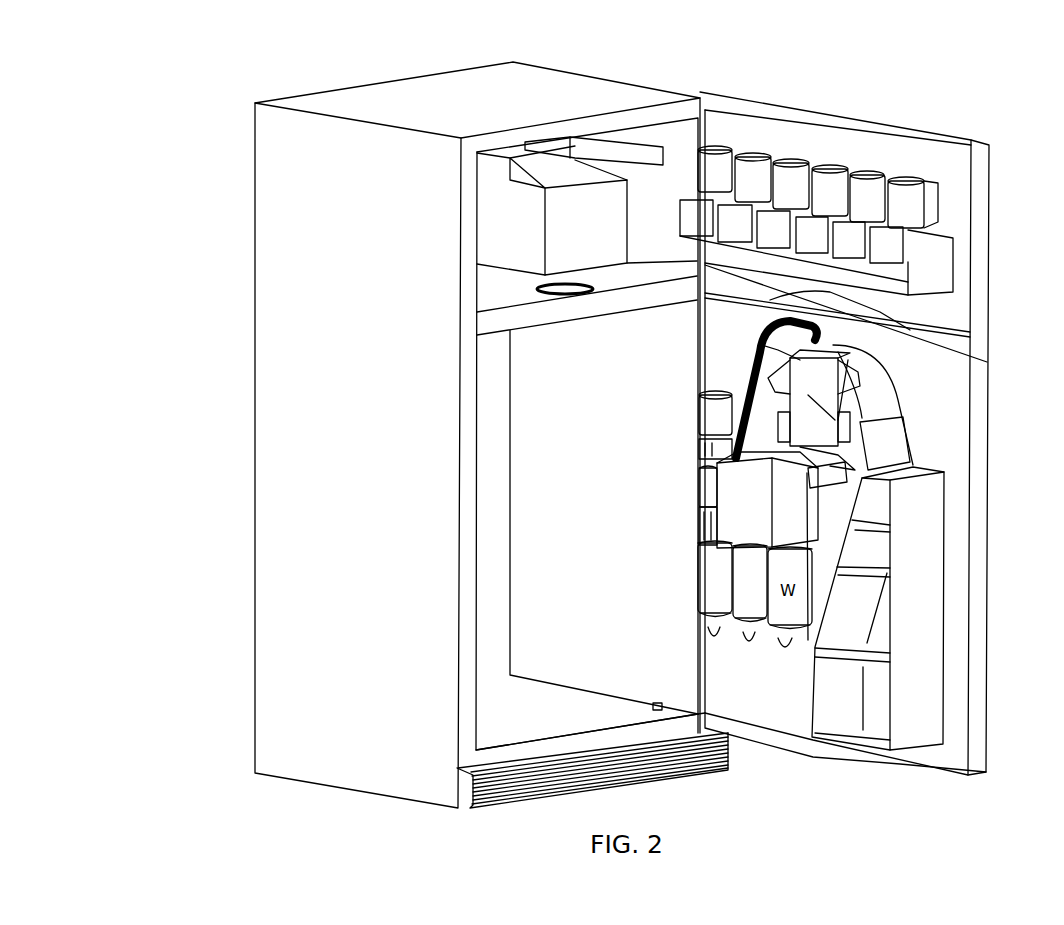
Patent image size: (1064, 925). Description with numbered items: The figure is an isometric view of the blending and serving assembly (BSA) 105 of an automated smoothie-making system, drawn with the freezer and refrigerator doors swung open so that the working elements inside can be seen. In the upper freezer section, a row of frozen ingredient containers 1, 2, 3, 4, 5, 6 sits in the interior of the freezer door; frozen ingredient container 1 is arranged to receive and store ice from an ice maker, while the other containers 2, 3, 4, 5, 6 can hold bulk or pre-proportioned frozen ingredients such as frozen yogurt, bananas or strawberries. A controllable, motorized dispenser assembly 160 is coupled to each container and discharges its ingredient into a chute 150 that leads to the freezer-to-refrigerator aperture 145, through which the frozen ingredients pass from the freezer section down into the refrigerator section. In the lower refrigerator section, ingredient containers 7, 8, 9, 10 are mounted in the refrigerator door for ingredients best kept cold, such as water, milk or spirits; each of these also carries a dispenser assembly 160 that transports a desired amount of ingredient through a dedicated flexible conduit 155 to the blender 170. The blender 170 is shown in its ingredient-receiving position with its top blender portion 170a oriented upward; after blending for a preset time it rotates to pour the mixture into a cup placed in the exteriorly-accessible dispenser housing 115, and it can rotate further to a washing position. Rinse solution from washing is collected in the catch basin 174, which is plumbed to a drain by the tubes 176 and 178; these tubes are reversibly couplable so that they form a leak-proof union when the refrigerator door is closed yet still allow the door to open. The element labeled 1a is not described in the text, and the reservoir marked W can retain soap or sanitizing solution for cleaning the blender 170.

The blending and serving assembly (BSA) 105 is at (210, 69).
The chute 150 is at (986, 363).
The frozen ingredient container 1 is at (740, 134).
The freezer box 1a is at (643, 193).
The frozen ingredient container 2 is at (753, 177).
The frozen ingredient container 3 is at (791, 184).
The frozen ingredient container 4 is at (830, 190).
The frozen ingredient container 5 is at (867, 196).
The frozen ingredient container 6 is at (913, 202).
The ingredient container 7 is at (698, 413).
The ingredient container 8 is at (698, 488).
The ingredient container 9 is at (715, 579).
The ingredient container 10 is at (750, 583).
The dispenser housing 115 is at (782, 500).
The freezer-to-refrigerator aperture 145 is at (538, 289).
The conduit 155 is at (744, 359).
The dispenser assembly 160 is at (698, 437).
The blender 170 is at (814, 410).
The top blender portion 170a is at (840, 335).
The catch basin 174 is at (875, 608).
The tube 176 is at (769, 736).
The tube 178 is at (588, 690).